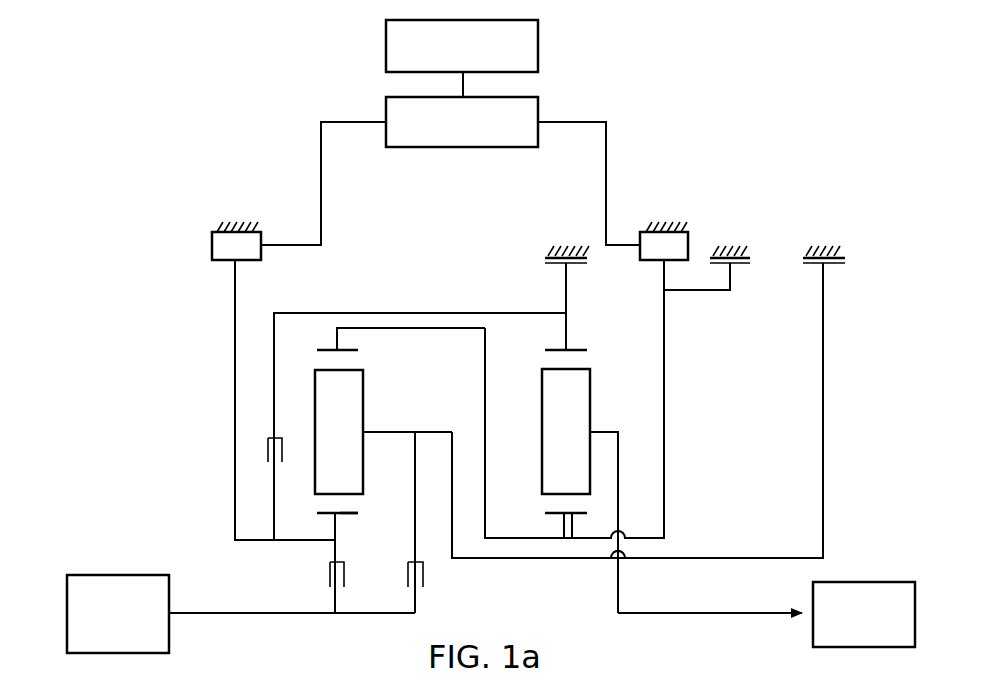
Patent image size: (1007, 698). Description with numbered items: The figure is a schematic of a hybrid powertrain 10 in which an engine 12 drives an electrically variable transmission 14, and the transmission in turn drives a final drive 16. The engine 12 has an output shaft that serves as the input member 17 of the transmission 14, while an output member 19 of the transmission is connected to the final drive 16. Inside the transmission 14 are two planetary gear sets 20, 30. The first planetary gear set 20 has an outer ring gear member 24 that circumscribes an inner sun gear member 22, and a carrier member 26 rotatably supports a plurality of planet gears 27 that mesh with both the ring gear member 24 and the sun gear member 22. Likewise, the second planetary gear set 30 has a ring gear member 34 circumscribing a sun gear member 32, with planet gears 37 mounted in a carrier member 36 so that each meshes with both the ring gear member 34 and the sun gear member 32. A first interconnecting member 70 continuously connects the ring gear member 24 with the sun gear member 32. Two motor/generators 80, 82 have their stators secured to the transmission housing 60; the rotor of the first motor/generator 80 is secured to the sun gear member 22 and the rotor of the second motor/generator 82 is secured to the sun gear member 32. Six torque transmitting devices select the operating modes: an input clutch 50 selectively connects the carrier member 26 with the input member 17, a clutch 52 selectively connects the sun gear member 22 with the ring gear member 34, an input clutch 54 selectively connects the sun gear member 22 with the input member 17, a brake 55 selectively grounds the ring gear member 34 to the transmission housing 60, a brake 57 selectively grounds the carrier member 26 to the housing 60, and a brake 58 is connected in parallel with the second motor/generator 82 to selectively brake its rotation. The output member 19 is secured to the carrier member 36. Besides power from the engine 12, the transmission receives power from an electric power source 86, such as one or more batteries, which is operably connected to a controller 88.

The powertrain 10 is at (165, 374).
The engine 12 is at (136, 556).
The electrically variable transmission 14 is at (199, 330).
The final drive 16 is at (850, 564).
The input member 17 is at (207, 616).
The output member 19 is at (772, 616).
The first planetary gear set 20 is at (328, 520).
The sun gear member 22 is at (346, 516).
The ring gear member 24 is at (330, 348).
The carrier member 26 is at (372, 425).
The planet gears 27 is at (339, 432).
The second planetary gear set 30 is at (553, 517).
The sun gear member 32 is at (575, 516).
The ring gear member 34 is at (558, 348).
The carrier member 36 is at (600, 425).
The planet gears 37 is at (566, 431).
The input clutch 50 is at (402, 590).
The clutch 52 is at (262, 462).
The input clutch 54 is at (323, 590).
The brake 55 is at (540, 256).
The brake 57 is at (850, 256).
The brake 58 is at (755, 256).
The transmission housing 60 is at (222, 224).
The first interconnecting member 70 is at (420, 328).
The first motor/generator 80 is at (270, 229).
The second motor/generator 82 is at (642, 268).
The electric power source 86 is at (386, 48).
The controller 88 is at (386, 110).